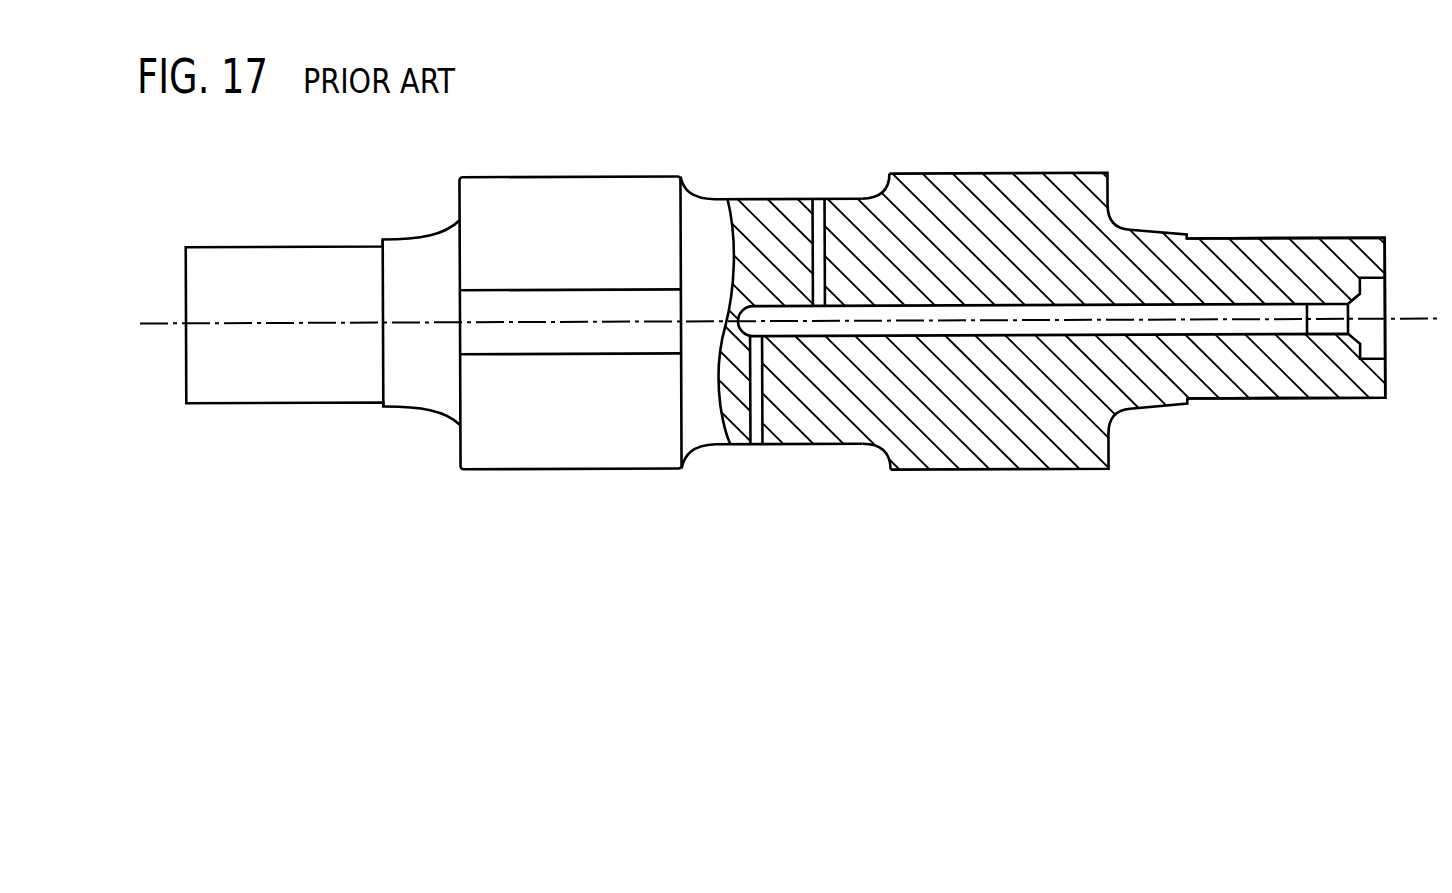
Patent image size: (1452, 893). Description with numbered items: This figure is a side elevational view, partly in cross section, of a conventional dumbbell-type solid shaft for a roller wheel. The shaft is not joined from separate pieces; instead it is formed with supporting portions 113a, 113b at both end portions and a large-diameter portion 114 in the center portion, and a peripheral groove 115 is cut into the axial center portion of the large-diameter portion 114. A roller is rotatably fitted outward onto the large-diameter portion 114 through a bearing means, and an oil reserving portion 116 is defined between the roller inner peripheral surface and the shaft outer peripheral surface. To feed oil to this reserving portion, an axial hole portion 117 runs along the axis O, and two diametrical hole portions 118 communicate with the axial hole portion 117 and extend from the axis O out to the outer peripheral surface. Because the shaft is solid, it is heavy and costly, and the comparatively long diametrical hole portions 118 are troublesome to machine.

The supporting portion 113a is at (1315, 390).
The supporting portion 113b is at (257, 398).
The large-diameter portion 114 is at (1008, 471).
The peripheral groove 115 is at (695, 450).
The oil reserving portion 116 is at (833, 446).
The axial hole portion 117 is at (1021, 340).
The diametrical hole portion 118 is at (812, 199).
The axis O is at (1423, 319).